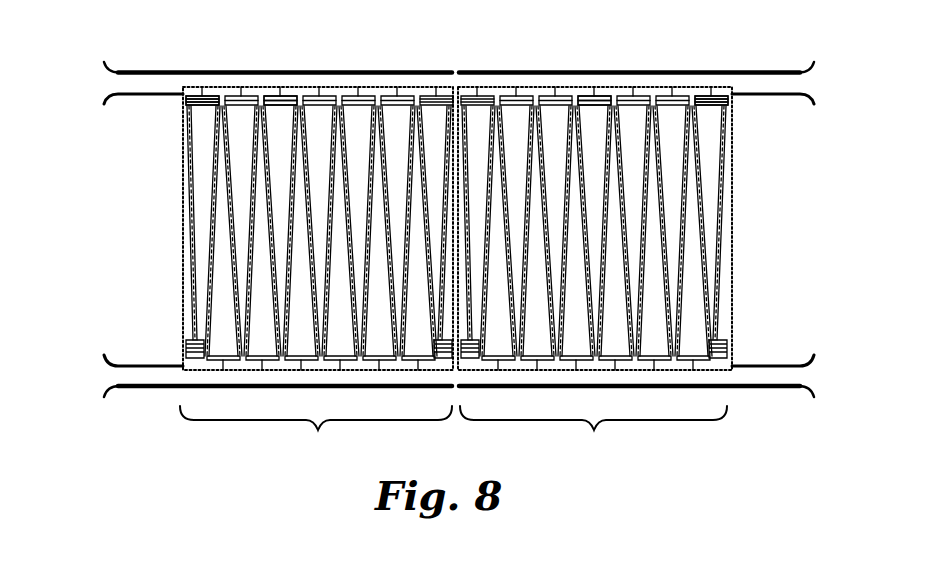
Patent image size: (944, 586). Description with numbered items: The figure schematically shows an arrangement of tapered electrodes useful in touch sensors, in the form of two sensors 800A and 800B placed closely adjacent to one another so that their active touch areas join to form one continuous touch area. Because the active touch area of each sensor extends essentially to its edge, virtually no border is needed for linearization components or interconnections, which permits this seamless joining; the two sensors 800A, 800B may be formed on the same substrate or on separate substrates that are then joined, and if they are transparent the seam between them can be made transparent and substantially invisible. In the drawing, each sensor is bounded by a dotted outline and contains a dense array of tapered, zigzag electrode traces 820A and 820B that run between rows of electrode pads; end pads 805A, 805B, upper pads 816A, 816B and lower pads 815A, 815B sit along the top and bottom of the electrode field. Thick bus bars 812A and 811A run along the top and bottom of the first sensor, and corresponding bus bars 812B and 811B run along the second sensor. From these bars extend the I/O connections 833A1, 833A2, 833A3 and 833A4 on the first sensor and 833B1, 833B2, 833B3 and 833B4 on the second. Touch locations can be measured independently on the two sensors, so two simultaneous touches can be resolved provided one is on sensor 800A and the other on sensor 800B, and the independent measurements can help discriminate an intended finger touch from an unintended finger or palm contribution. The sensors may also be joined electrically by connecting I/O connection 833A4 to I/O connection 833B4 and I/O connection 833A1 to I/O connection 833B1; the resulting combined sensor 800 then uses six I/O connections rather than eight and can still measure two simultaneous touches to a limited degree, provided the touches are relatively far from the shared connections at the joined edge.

The combined sensor 800 is at (461, 56).
The sensor 800A is at (316, 434).
The sensor 800B is at (593, 434).
The first end electrode pad 805A is at (209, 96).
The second end electrode pad 805B is at (699, 96).
The first bottom terminal bar 811A is at (167, 388).
The second bottom terminal bar 811B is at (744, 388).
The first top terminal bar 812A is at (170, 72).
The second top terminal bar 812B is at (741, 72).
The first bottom electrode pads 815A is at (321, 373).
The second bottom electrode pads 815B is at (590, 373).
The first top electrode pad 816A is at (306, 96).
The second top electrode pad 816B is at (606, 96).
The first zigzag conductive traces 820A is at (240, 171).
The second zigzag conductive traces 820B is at (672, 170).
The I/O connection 833A1 is at (105, 56).
The terminal lead 833A2 is at (129, 113).
The terminal lead 833A3 is at (126, 345).
The I/O connection 833A4 is at (102, 405).
The I/O connection 833B1 is at (824, 56).
The terminal lead 833B2 is at (794, 114).
The terminal lead 833B3 is at (790, 345).
The I/O connection 833B4 is at (822, 405).